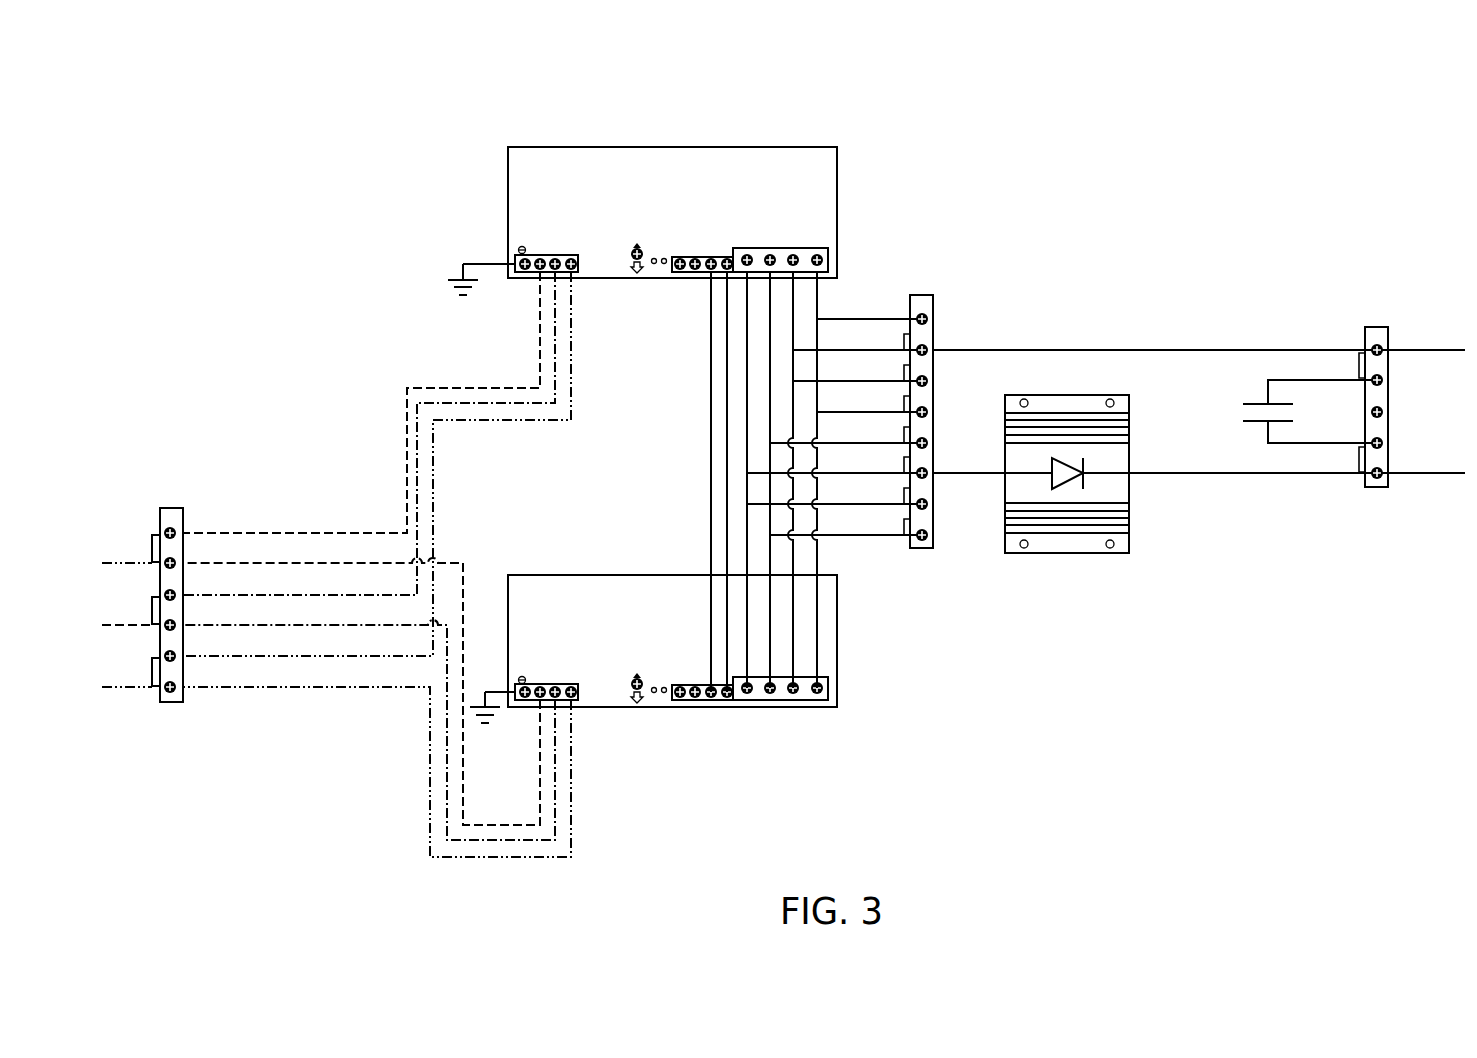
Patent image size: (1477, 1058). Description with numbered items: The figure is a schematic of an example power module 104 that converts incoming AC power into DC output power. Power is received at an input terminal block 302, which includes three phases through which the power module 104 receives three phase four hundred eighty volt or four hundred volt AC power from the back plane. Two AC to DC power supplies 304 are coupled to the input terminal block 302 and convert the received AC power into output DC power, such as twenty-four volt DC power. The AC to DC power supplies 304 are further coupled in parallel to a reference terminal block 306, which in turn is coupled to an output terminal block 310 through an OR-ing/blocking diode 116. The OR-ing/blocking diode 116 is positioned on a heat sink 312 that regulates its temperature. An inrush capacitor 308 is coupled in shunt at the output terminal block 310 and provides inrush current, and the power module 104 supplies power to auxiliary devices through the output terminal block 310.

The power module 104 is at (903, 128).
The input terminal block 302 is at (172, 506).
The AC to DC power supplies 304 is at (838, 213).
The reference terminal block 306 is at (935, 298).
The inrush capacitor 308 is at (1257, 422).
The output terminal block 310 is at (1388, 413).
The heat sink 312 is at (1078, 395).
The OR-ing/blocking diode 116 is at (1087, 483).